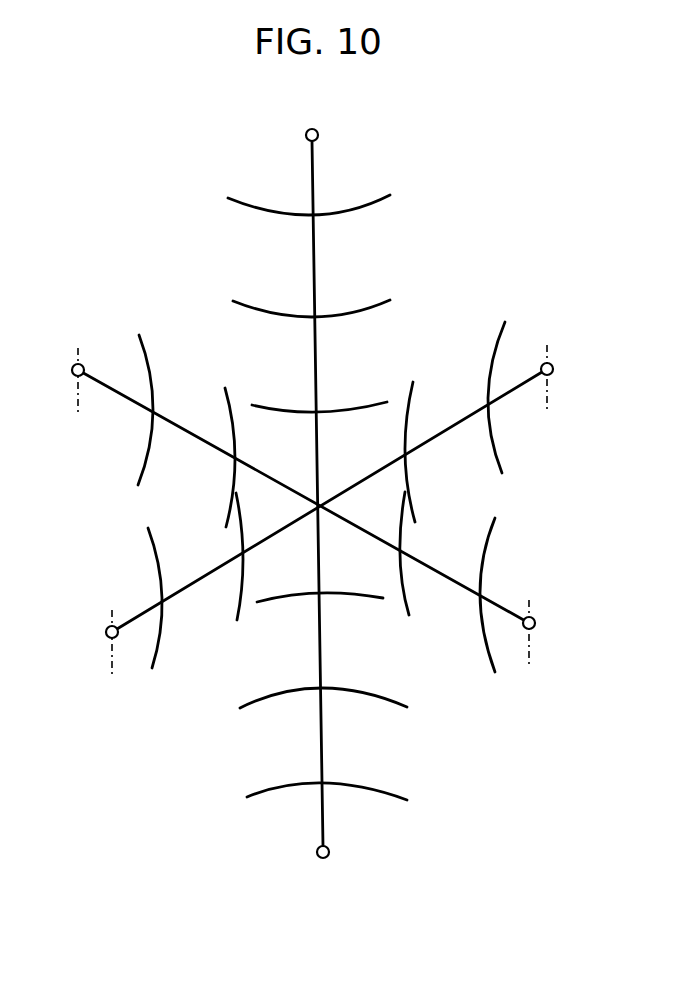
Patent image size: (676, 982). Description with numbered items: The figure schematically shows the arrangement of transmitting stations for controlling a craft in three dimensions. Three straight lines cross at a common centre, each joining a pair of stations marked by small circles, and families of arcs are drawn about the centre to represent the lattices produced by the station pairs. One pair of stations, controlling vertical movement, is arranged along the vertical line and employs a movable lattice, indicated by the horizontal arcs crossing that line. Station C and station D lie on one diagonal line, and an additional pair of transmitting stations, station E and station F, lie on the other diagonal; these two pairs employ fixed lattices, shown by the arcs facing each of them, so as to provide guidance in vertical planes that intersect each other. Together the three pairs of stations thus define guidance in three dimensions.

The transmitting station C is at (66, 380).
The transmitting station D is at (540, 632).
The transmitting station E is at (101, 644).
The transmitting station F is at (557, 377).